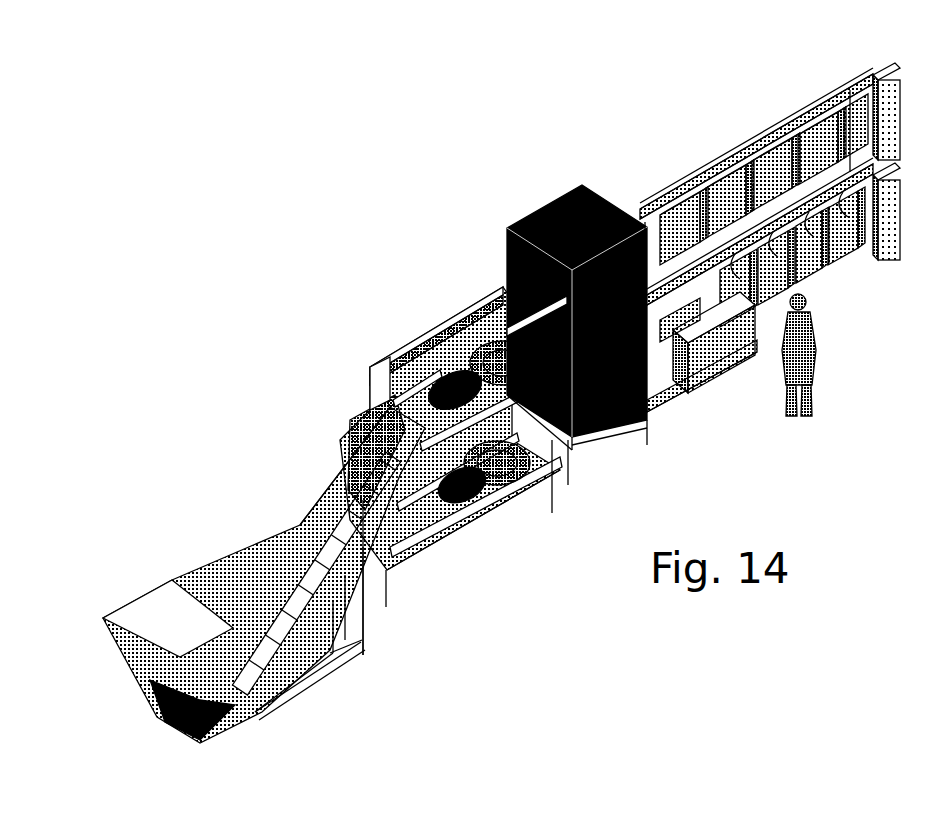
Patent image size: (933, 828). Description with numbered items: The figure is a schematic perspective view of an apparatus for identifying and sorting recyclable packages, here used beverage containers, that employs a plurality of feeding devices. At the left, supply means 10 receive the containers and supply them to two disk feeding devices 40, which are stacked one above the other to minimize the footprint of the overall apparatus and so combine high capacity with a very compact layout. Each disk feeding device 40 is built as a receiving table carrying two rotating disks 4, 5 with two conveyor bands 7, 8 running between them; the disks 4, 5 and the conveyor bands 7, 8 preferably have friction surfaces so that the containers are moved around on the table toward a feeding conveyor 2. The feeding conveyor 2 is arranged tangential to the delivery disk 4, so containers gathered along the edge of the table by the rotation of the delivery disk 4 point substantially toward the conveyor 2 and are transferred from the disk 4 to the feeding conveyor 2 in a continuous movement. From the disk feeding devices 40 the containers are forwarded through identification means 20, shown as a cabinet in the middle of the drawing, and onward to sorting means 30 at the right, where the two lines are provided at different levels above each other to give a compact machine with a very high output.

The supply means 10 is at (133, 568).
The disk feeding devices 40 is at (408, 418).
The feeding conveyor 2 is at (410, 358).
The delivery disk 4 is at (340, 440).
The rotating disk 5 is at (460, 335).
The conveyor band 7 is at (440, 350).
The conveyor band 8 is at (443, 335).
The identification means 20 is at (555, 205).
The sorting means 30 is at (740, 118).